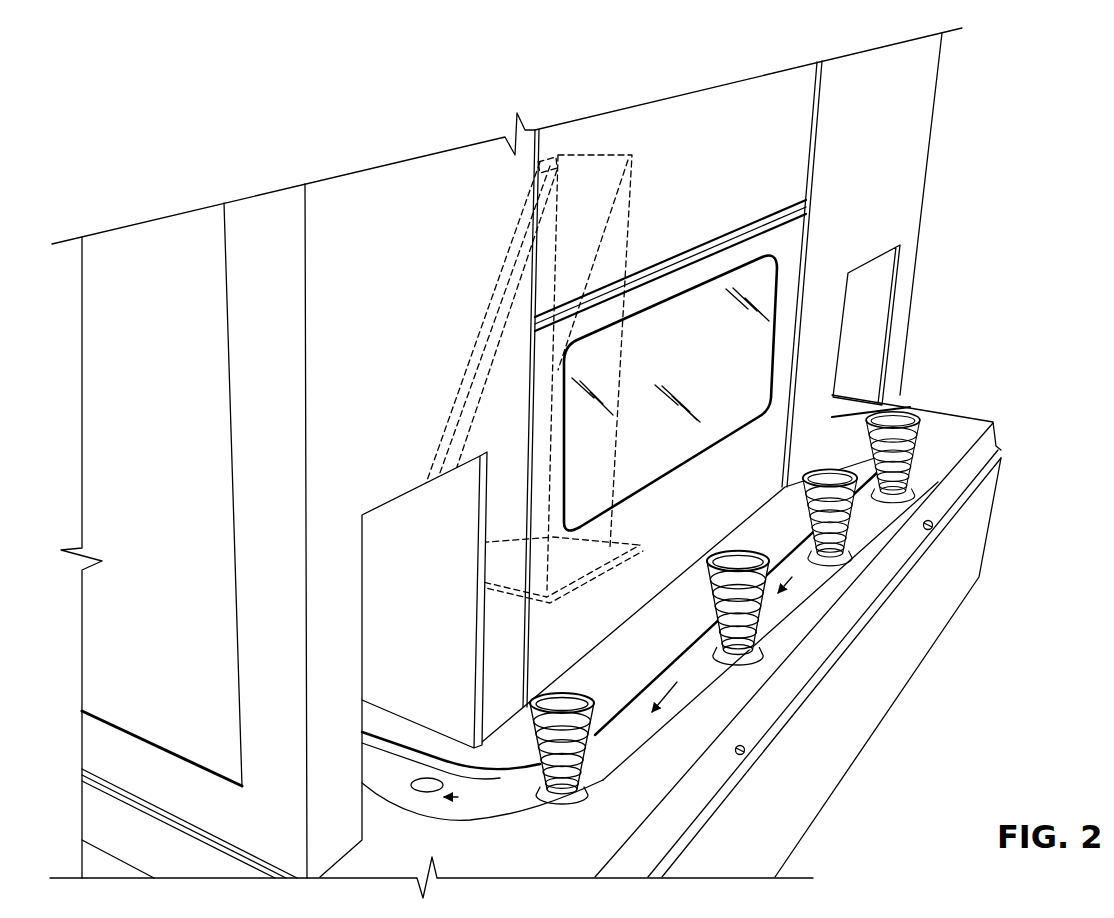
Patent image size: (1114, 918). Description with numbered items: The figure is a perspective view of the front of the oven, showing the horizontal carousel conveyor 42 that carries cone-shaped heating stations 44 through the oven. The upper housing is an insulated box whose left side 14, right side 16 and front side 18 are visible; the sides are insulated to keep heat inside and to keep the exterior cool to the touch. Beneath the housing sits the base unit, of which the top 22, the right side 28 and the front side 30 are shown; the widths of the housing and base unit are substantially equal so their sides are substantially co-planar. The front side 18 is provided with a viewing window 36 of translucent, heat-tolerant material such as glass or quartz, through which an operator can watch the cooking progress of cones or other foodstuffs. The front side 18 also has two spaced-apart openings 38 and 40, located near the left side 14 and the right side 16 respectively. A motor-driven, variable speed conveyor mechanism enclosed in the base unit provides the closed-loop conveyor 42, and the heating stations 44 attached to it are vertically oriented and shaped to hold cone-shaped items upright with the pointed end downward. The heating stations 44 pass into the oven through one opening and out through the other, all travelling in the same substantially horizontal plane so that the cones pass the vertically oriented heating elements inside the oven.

The left side 14 is at (278, 489).
The right side 16 is at (926, 283).
The front side 18 is at (894, 156).
The top 22 is at (952, 413).
The right side 28 is at (1002, 466).
The front side 30 is at (972, 539).
The viewing window 36 is at (700, 367).
The opening 38 is at (383, 502).
The opening 40 is at (880, 257).
The horizontal carousel conveyor 42 is at (616, 751).
The heating station 44 is at (912, 407).